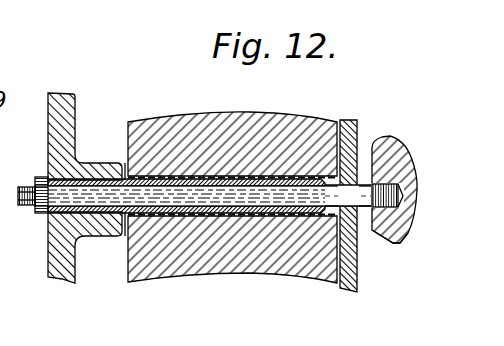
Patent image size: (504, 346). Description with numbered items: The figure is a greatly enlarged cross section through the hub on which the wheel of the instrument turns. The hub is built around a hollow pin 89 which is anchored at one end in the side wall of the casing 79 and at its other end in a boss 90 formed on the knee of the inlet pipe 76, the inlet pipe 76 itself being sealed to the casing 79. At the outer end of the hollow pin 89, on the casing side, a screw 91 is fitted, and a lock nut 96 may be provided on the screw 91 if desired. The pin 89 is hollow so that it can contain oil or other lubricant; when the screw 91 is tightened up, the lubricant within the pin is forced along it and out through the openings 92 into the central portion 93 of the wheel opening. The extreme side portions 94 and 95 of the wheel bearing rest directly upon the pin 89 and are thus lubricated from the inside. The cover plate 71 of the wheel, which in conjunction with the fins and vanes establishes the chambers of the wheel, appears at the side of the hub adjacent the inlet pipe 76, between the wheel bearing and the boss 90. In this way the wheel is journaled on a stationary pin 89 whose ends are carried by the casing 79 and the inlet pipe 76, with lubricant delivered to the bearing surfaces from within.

The cover plate 71 is at (353, 290).
The inlet pipe 76 is at (395, 141).
The casing 79 is at (72, 283).
The hollow pin 89 is at (281, 207).
The boss 90 is at (390, 238).
The screw 91 is at (25, 205).
The openings 92 is at (232, 198).
The central portion of the wheel opening 93 is at (208, 178).
The side portion of the wheel bearing 94 is at (122, 180).
The side portion of the wheel bearing 95 is at (330, 177).
The lock nut 96 is at (40, 180).